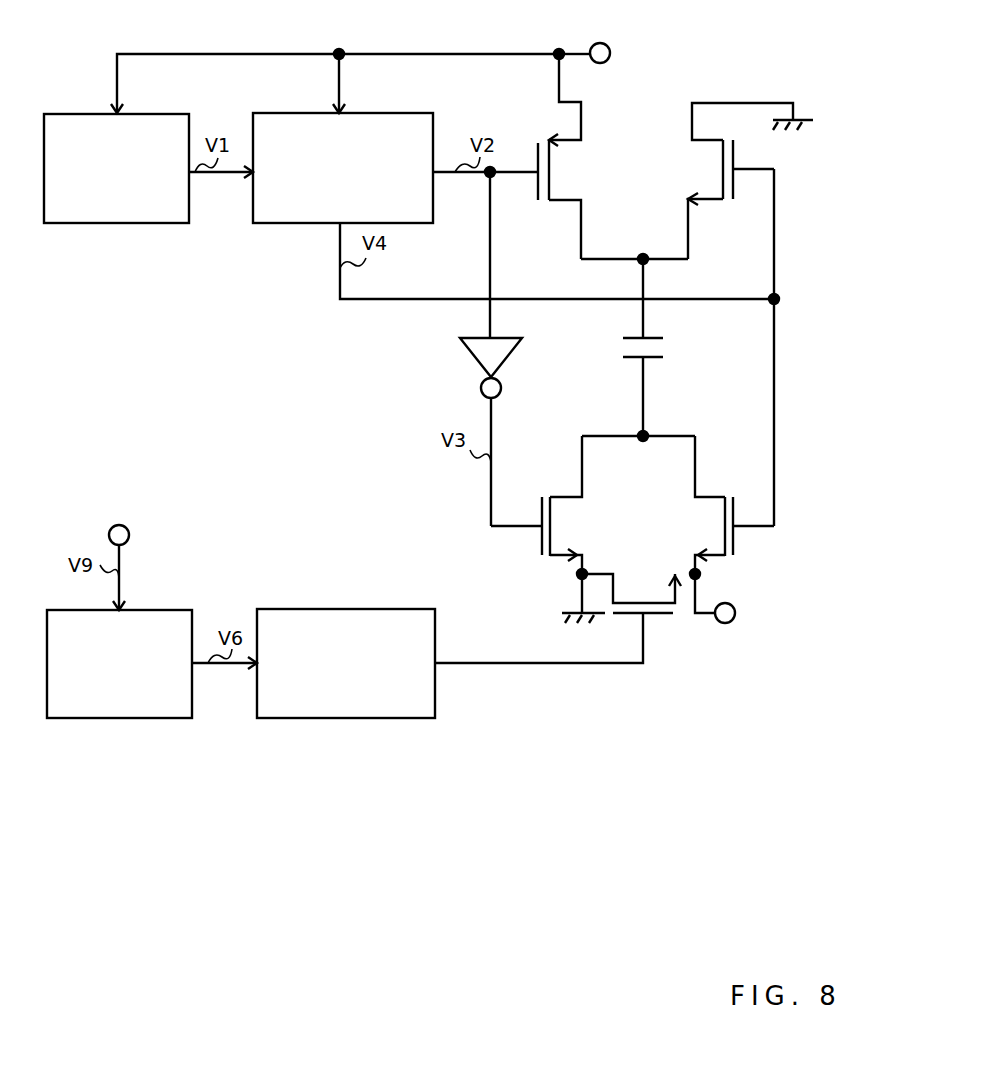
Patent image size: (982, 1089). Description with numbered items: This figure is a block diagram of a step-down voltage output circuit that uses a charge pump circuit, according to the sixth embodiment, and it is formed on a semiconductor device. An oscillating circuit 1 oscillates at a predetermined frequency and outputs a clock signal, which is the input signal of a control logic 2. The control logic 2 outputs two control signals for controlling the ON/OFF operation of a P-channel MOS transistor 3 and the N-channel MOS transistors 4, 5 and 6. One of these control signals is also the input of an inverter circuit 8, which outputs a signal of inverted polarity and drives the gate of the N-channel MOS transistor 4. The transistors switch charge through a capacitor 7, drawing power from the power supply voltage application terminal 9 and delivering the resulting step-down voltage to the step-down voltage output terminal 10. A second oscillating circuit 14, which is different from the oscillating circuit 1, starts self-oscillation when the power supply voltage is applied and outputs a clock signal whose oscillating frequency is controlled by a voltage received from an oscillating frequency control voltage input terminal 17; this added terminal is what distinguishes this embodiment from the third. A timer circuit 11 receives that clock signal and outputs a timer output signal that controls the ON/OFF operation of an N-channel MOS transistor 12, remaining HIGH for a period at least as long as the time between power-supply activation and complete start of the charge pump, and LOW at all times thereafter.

The oscillating circuit 1 is at (82, 113).
The control logic 2 is at (312, 224).
The P-channel MOS transistor 3 is at (586, 152).
The N-channel MOS transistor 4 is at (588, 517).
The N-channel MOS transistor 5 is at (690, 184).
The N-channel MOS transistor 6 is at (685, 519).
The capacitor 7 is at (628, 360).
The inverter circuit 8 is at (478, 358).
The power supply voltage application terminal 9 is at (562, 46).
The step-down voltage output terminal 10 is at (725, 623).
The timer circuit 11 is at (376, 609).
The N-channel MOS transistor 12 is at (662, 617).
The second oscillating circuit 14 is at (154, 610).
The oscillating frequency control voltage input terminal 17 is at (124, 526).